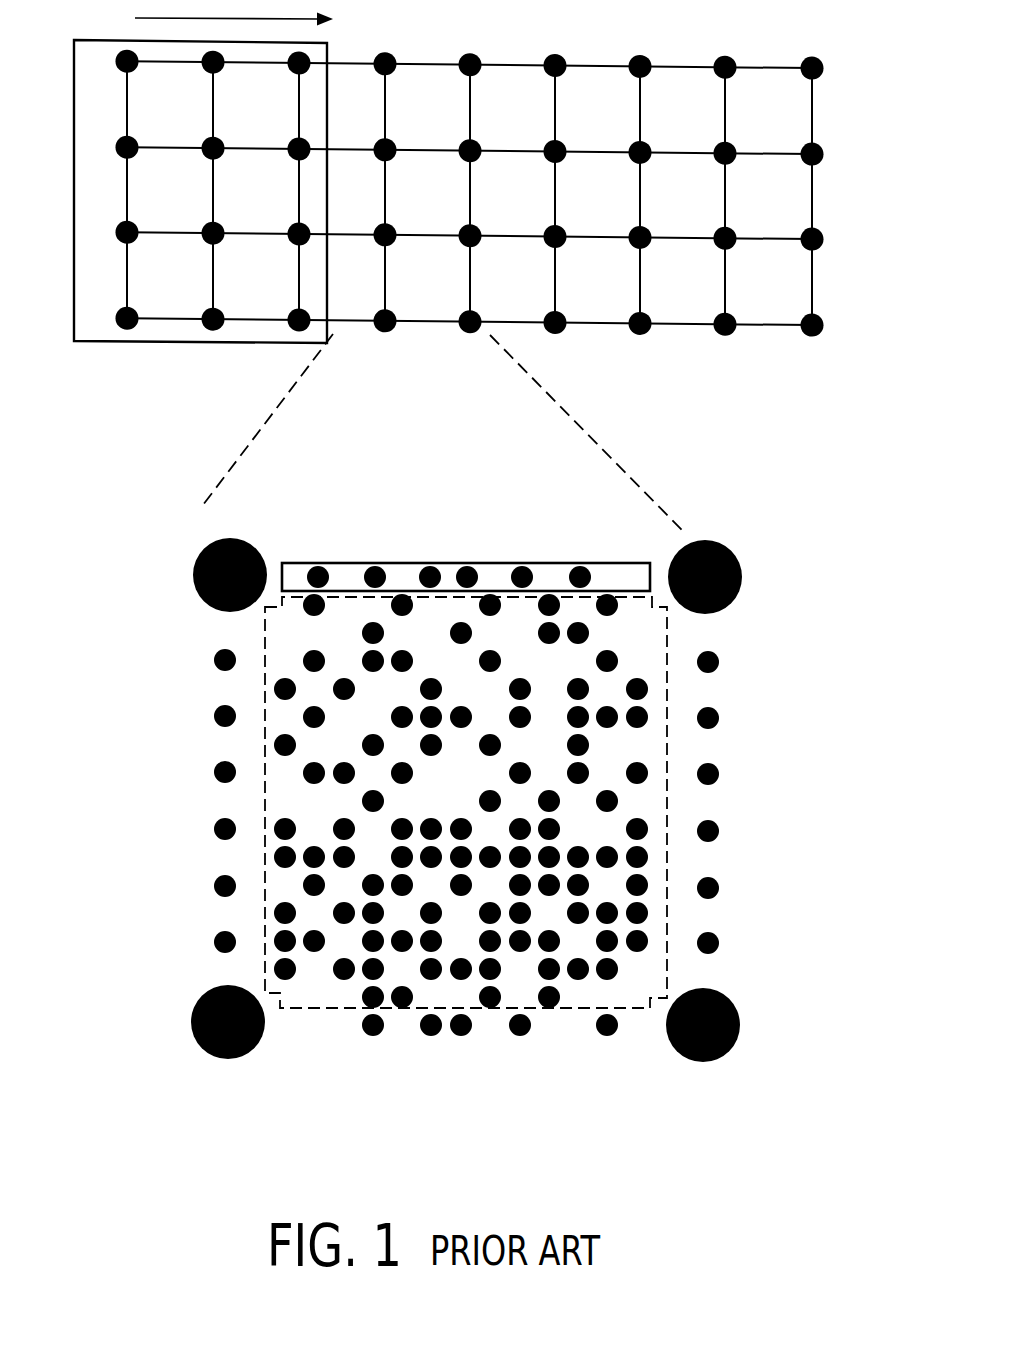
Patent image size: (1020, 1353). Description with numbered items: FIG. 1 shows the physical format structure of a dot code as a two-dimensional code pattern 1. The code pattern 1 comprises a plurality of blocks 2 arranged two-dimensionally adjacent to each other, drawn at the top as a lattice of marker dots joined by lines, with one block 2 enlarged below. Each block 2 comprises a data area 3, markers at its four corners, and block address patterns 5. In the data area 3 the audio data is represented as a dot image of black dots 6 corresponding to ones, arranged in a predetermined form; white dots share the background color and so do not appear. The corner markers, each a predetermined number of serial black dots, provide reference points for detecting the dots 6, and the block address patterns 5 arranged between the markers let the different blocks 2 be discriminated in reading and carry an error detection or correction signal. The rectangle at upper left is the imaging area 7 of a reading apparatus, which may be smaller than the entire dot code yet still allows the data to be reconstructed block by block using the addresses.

The code pattern 1 is at (502, 168).
The block 2 is at (469, 193).
The data area 3 is at (335, 1010).
The block address pattern 5 is at (367, 553).
The dot 6 is at (648, 688).
The imaging area 7 is at (142, 343).